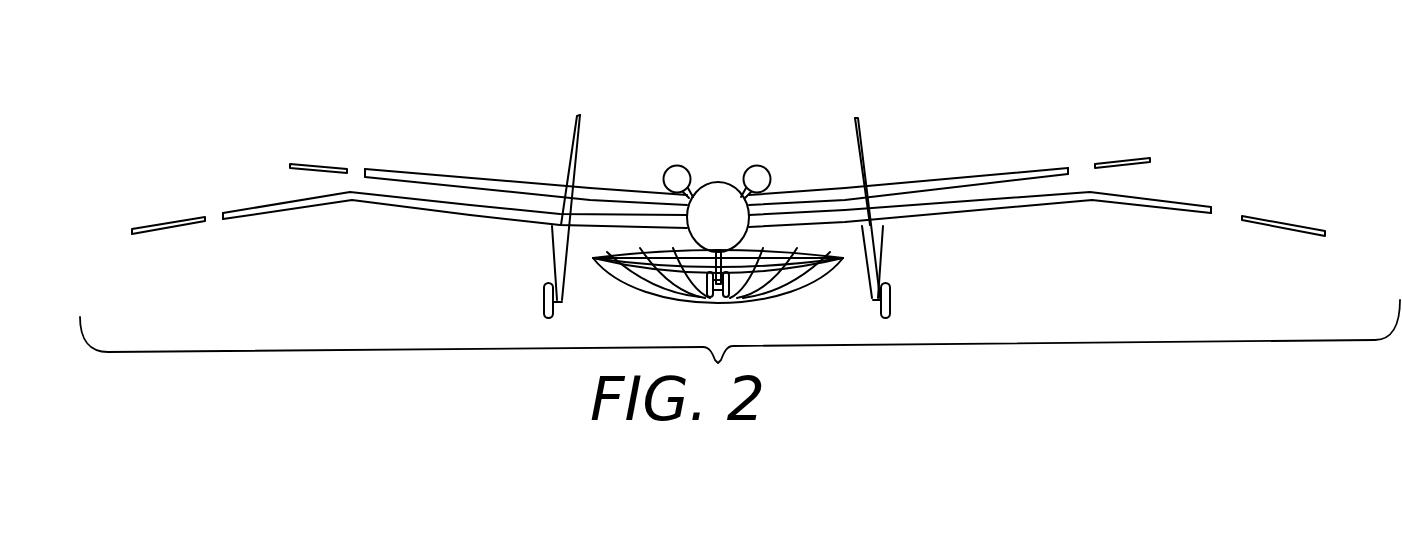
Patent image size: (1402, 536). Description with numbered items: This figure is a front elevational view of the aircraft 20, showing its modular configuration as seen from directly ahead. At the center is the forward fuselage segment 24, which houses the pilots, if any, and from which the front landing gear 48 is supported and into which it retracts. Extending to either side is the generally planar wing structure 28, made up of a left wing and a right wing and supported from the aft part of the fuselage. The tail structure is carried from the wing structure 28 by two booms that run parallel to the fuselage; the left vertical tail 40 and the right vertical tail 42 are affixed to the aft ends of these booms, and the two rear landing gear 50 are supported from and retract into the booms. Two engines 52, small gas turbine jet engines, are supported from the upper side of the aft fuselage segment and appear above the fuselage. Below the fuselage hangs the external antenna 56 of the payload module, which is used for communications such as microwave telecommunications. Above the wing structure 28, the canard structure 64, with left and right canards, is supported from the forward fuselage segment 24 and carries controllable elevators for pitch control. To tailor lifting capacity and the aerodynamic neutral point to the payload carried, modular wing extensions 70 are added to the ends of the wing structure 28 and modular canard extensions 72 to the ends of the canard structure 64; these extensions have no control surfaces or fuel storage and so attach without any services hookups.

The aircraft 20 is at (1018, 222).
The forward fuselage segment 24 is at (732, 240).
The wing structure 28 is at (488, 220).
The left vertical tail 40 is at (867, 156).
The right vertical tail 42 is at (573, 138).
The front landing gear 48 is at (712, 297).
The rear landing gear 50 is at (544, 296).
The engines 52 is at (751, 164).
The external antenna 56 is at (795, 282).
The canard structure 64 is at (814, 190).
The modular wing extensions 70 is at (155, 218).
The modular canard extensions 72 is at (305, 163).